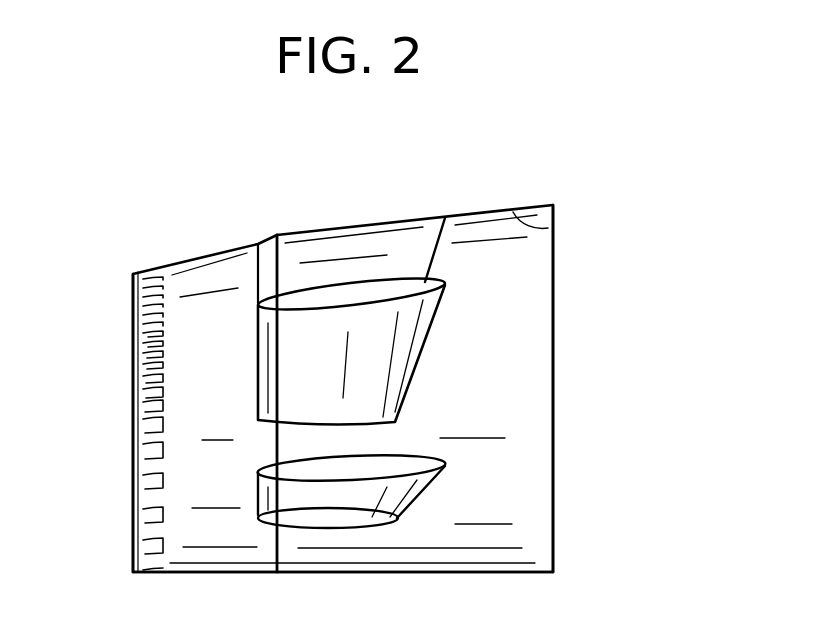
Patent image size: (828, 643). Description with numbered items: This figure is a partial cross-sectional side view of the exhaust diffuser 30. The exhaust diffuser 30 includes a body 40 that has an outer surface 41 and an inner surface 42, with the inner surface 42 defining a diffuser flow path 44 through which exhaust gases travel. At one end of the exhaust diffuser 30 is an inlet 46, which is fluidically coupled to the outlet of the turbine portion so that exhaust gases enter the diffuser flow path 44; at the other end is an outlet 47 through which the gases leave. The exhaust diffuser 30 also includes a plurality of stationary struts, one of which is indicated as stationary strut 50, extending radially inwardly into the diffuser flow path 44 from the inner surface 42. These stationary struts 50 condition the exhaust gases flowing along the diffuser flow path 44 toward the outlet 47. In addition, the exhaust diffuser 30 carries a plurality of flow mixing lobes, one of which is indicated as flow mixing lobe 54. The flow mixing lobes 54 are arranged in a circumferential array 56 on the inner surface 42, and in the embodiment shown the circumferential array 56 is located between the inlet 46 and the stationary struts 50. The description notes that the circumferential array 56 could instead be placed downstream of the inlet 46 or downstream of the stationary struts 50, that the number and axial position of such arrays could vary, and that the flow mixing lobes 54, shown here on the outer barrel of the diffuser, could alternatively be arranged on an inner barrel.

The exhaust diffuser 30 is at (567, 469).
The body 40 is at (218, 282).
The outer surface 41 is at (477, 230).
The inner surface 42 is at (548, 228).
The diffuser flow path 44 is at (460, 393).
The inlet 46 is at (133, 273).
The outlet 47 is at (553, 530).
The stationary strut 50 is at (428, 509).
The flow mixing lobe 54 is at (177, 514).
The circumferential array 56 is at (186, 397).